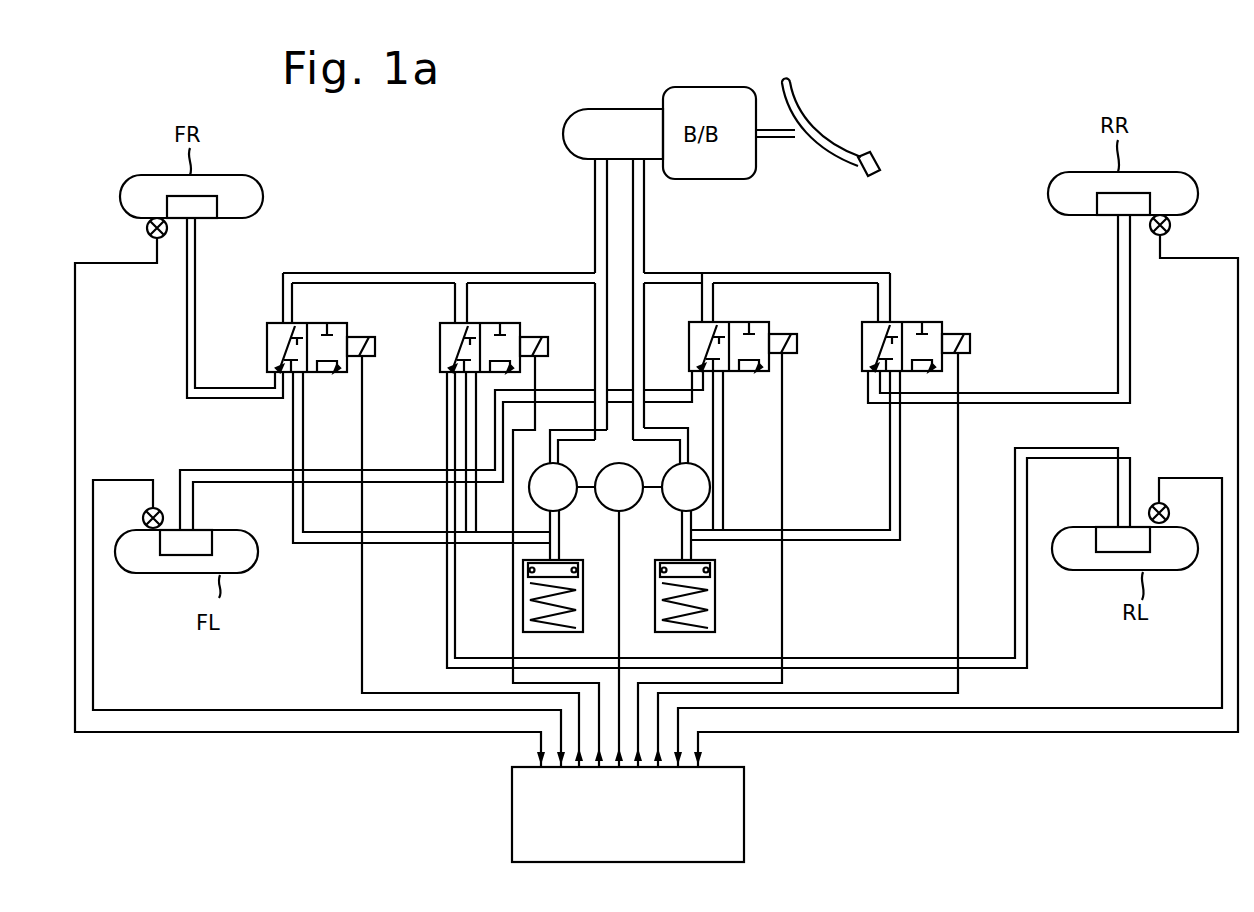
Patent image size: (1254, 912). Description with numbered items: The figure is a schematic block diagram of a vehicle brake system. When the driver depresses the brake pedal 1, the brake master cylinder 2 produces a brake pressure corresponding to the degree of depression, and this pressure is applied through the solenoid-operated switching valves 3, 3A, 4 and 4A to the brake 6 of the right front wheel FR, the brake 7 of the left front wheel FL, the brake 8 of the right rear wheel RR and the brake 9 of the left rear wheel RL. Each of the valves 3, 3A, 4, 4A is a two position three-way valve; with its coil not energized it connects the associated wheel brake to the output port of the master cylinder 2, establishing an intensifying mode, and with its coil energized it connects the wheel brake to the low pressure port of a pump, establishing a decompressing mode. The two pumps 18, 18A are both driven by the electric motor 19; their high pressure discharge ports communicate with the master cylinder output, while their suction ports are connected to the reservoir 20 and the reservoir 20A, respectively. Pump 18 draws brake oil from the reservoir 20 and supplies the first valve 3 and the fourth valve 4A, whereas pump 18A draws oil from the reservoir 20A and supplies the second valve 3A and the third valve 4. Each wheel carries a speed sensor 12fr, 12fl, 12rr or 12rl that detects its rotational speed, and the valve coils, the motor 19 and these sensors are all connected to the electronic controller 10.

The brake pedal 1 is at (876, 158).
The brake master cylinder 2 is at (563, 134).
The first solenoid-operated switching valve 3 is at (350, 322).
The fourth solenoid-operated switching valve 4A is at (522, 322).
The second solenoid-operated switching valve 3A is at (771, 320).
The third solenoid-operated switching valve 4 is at (937, 322).
The brake 6 is at (221, 205).
The brake 7 is at (170, 557).
The brake 8 is at (1097, 200).
The brake 9 is at (1097, 552).
The electronic controller 10 is at (745, 795).
The speed sensor 12fr is at (148, 231).
The speed sensor 12fl is at (158, 506).
The speed sensor 12rr is at (1172, 229).
The speed sensor 12rl is at (1152, 503).
The pump 18 is at (571, 480).
The pump 18A is at (672, 508).
The electric motor 19 is at (606, 508).
The reservoir 20 is at (583, 600).
The reservoir 20A is at (715, 610).